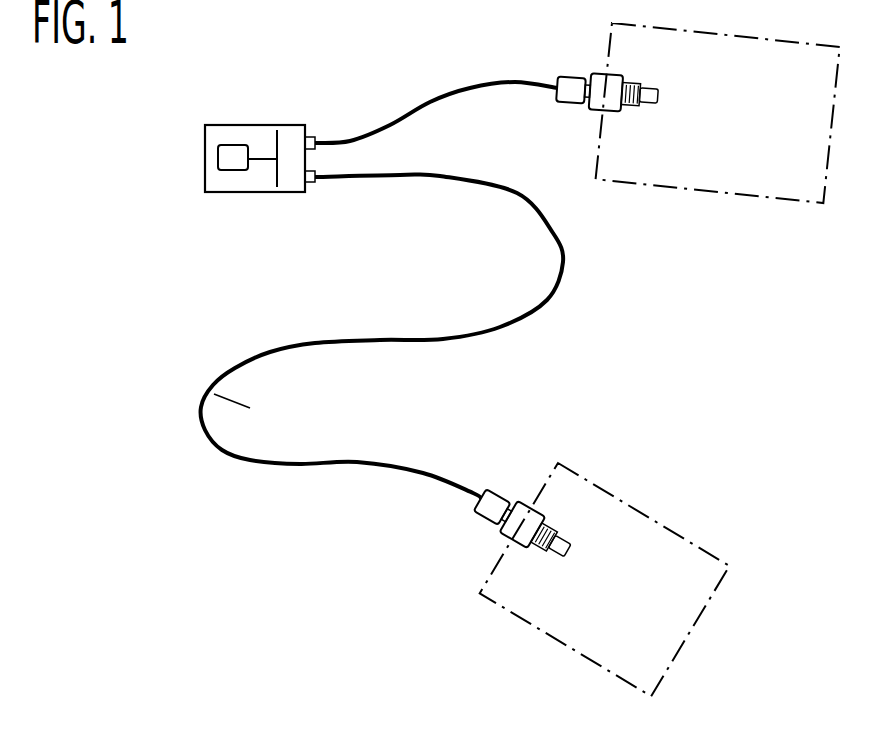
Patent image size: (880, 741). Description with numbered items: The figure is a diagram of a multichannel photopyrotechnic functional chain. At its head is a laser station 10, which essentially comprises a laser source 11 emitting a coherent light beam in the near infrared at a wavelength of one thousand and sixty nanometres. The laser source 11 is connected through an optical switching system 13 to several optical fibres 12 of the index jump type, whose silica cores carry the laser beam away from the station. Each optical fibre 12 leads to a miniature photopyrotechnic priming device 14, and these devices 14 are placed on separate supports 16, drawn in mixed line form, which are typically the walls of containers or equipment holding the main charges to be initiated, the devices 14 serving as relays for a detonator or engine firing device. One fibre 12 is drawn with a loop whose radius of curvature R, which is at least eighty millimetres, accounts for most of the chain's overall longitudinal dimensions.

The laser station 10 is at (230, 120).
The laser source 11 is at (233, 162).
The optical fibres 12 is at (472, 89).
The optical switching system 13 is at (292, 138).
The photopyrotechnic priming devices 14 is at (592, 66).
The supports 16 is at (660, 359).
The radius of curvature R is at (210, 392).